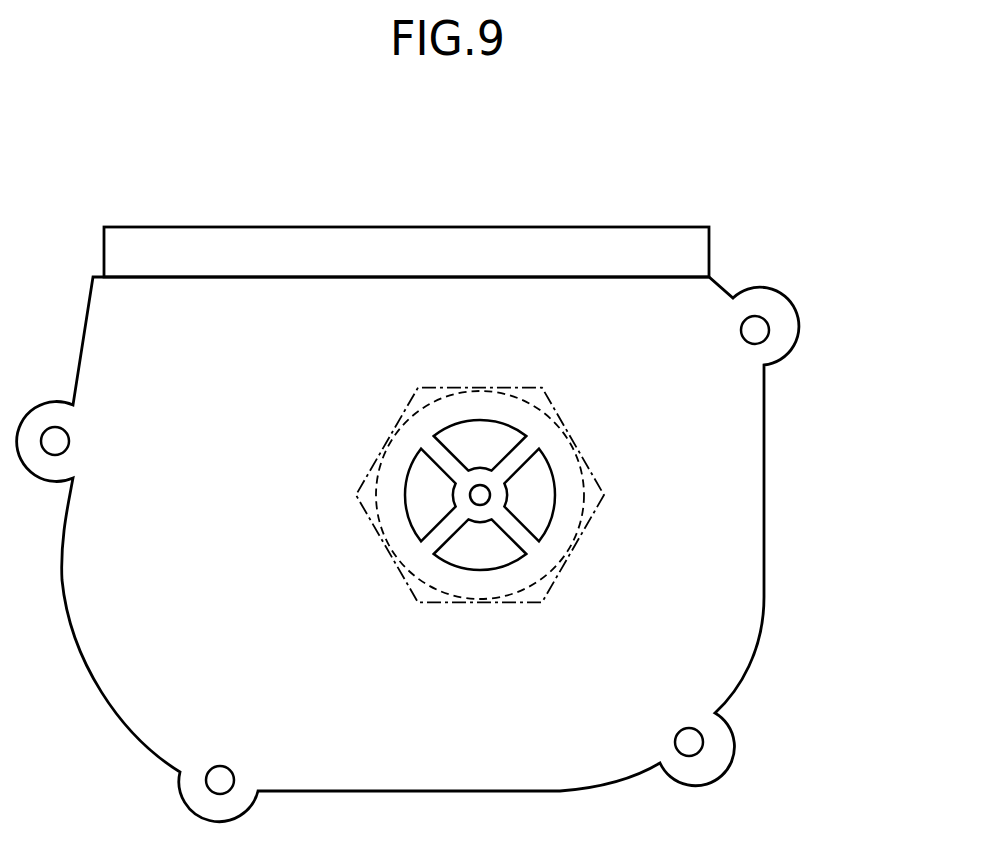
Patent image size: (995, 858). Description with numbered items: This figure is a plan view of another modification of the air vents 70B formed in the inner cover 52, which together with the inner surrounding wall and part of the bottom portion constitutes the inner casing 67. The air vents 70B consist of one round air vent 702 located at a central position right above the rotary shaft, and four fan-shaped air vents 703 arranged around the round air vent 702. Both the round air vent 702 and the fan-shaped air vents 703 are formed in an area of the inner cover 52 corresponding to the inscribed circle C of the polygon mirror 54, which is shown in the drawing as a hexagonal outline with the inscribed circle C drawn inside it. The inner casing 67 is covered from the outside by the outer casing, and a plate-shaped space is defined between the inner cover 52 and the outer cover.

The inner cover 52 is at (462, 524).
The inner casing 67 is at (765, 503).
The polygon mirror 54 is at (590, 468).
The inscribed circle C is at (543, 406).
The air vents 70B is at (366, 510).
The round air vent 702 is at (472, 495).
The fan-shaped air vents 703 is at (470, 555).